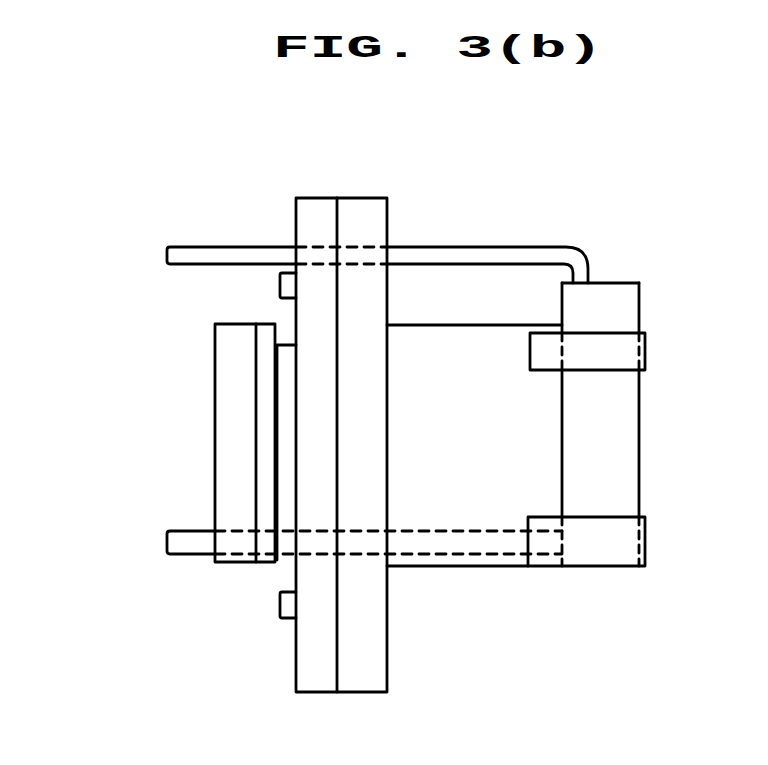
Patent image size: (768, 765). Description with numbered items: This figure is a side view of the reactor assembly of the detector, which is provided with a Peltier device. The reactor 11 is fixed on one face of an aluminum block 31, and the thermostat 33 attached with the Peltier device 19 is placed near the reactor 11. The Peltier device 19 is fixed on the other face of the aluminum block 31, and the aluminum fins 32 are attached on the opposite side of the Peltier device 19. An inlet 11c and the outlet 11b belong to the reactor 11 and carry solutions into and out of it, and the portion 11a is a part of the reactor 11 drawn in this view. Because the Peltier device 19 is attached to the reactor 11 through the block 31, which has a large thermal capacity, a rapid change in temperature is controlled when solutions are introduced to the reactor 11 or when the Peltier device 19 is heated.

The reactor 11 is at (646, 403).
The solenoid body 11a is at (618, 282).
The outlet 11b is at (517, 547).
The inlet 11c is at (542, 253).
The Peltier device 19 is at (287, 513).
The aluminum block 31 is at (470, 558).
The aluminum fins 32 is at (235, 557).
The thermostat 33 is at (281, 226).